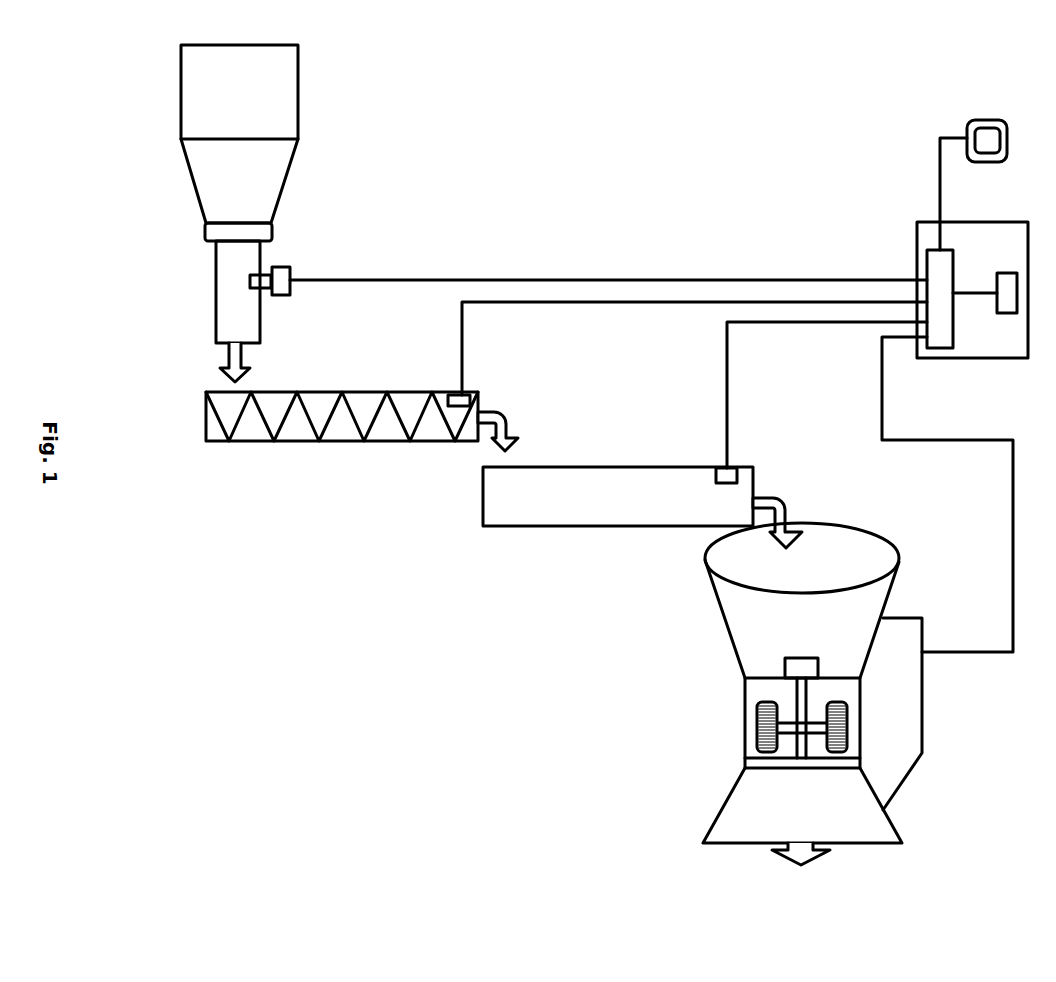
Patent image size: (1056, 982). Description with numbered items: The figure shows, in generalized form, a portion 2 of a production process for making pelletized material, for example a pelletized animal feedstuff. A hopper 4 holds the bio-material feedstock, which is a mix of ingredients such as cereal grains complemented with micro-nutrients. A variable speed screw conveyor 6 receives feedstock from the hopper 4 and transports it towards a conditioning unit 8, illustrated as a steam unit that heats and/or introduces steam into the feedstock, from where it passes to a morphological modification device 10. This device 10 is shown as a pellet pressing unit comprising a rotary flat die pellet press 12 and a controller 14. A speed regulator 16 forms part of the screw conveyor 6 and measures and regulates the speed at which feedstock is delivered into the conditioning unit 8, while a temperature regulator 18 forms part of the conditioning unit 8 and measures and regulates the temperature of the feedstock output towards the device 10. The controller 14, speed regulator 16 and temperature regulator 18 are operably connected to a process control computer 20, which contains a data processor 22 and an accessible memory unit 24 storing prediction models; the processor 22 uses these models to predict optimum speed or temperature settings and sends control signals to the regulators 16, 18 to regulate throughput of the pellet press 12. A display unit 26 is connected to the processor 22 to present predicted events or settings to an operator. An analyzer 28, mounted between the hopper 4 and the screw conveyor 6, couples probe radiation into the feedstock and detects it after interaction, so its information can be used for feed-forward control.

The portion of a production process 2 is at (222, 678).
The hopper 4 is at (239, 213).
The screw conveyor 6 is at (228, 442).
The conditioning unit 8 is at (583, 527).
The morphological modification device 10 is at (782, 601).
The rotary flat die pellet press 12 is at (745, 740).
The controller 14 is at (922, 708).
The speed regulator 16 is at (453, 395).
The temperature regulator 18 is at (717, 467).
The process control computer 20 is at (919, 269).
The data processor 22 is at (950, 317).
The memory unit 24 is at (997, 278).
The input/output device 26 is at (1010, 130).
The analyzer 28 is at (277, 267).